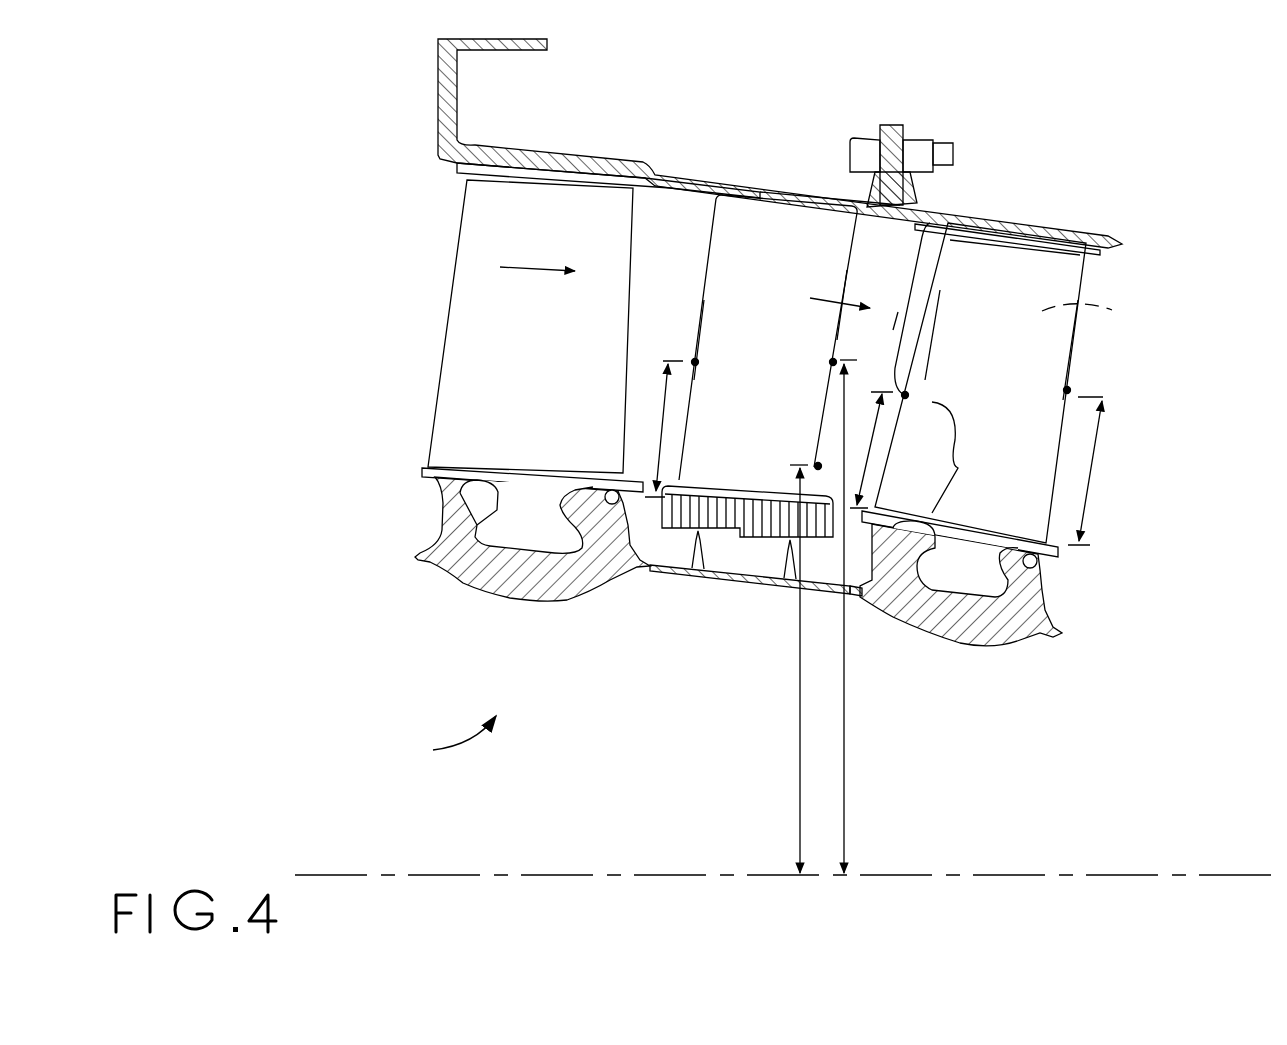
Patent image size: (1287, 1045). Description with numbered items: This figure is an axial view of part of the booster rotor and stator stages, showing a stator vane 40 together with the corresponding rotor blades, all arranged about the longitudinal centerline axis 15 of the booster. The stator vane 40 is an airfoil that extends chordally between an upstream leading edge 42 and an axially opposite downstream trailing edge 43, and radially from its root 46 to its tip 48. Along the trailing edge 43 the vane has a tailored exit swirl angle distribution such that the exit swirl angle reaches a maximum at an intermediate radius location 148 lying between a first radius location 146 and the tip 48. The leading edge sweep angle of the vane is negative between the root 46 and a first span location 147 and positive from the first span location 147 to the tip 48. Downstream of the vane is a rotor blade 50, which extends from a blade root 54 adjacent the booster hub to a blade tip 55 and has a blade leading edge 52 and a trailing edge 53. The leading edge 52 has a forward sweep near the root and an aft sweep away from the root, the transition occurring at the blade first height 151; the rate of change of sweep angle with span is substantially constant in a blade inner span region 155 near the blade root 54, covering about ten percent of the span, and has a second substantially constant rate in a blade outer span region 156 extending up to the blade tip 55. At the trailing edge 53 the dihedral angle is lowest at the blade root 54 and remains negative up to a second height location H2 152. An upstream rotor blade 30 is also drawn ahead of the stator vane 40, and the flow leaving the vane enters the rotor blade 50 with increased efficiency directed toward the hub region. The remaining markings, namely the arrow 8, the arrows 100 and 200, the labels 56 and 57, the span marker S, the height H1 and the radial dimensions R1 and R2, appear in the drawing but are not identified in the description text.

The radial direction 8 is at (454, 742).
The longitudinal centerline axis 15 is at (700, 845).
The upstream turbine blade 30 is at (487, 234).
The stator vane 40 is at (728, 250).
The leading edge 42 is at (707, 278).
The trailing edge 43 is at (856, 246).
The root 46 is at (750, 483).
The tip 48 is at (808, 207).
The rotor blade 50 is at (1047, 262).
The blade leading edge 52 is at (935, 286).
The trailing edge 53 is at (1082, 287).
The blade root 54 is at (965, 525).
The blade tip 55 is at (1077, 228).
The blade tip 56 is at (1020, 368).
The tip clearance 57 is at (1112, 310).
The flow direction 100 is at (540, 276).
The first radius location 146 is at (817, 464).
The first span location 147 is at (697, 364).
The intermediate radius location 148 is at (832, 361).
The blade first height 151 is at (907, 393).
The second height location 152 is at (1068, 389).
The blade inner span region 155 is at (958, 468).
The blade outer span region 156 is at (900, 313).
The flow direction 200 is at (830, 303).
The vane span S is at (665, 436).
The leading edge height H1 is at (873, 462).
The second height location H2 is at (1090, 476).
The inner radius R1 is at (800, 672).
The outer radius R2 is at (845, 710).